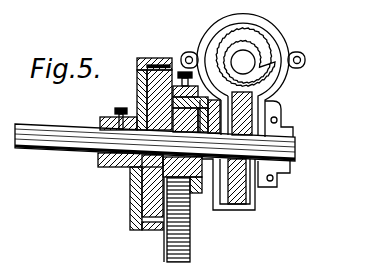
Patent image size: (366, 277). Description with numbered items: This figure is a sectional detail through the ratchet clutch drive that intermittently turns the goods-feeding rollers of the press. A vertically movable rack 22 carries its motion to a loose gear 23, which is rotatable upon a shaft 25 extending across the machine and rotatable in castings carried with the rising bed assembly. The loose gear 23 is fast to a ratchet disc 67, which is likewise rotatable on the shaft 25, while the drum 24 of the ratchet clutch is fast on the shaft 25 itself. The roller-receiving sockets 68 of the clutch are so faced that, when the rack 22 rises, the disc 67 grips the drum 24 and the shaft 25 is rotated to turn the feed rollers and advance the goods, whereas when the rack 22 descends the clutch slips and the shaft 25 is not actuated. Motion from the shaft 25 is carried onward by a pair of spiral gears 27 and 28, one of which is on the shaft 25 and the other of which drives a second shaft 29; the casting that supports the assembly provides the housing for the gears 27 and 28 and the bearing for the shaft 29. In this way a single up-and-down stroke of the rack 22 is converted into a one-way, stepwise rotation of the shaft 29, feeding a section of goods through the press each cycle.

The rack 22 is at (188, 244).
The loose gear 23 is at (190, 200).
The ratchet clutch drum 24 is at (147, 230).
The shaft 25 is at (284, 138).
The spiral gear 27 is at (238, 189).
The spiral gear 28 is at (261, 60).
The shaft 29 is at (245, 63).
The ratchet disc 67 is at (152, 187).
The roller-receiving sockets 68 is at (185, 72).